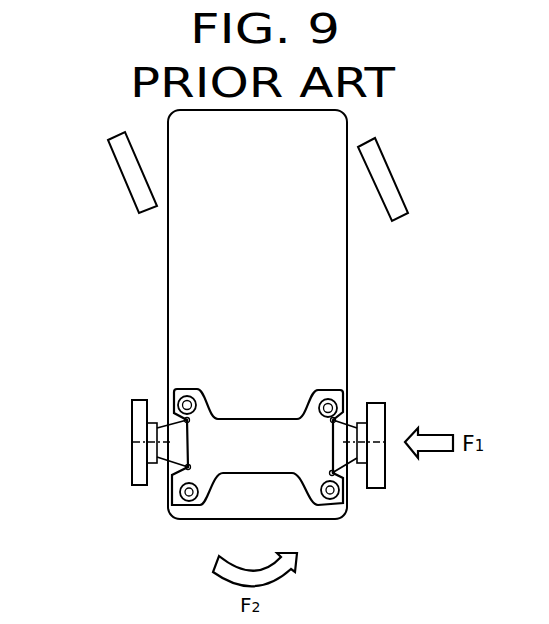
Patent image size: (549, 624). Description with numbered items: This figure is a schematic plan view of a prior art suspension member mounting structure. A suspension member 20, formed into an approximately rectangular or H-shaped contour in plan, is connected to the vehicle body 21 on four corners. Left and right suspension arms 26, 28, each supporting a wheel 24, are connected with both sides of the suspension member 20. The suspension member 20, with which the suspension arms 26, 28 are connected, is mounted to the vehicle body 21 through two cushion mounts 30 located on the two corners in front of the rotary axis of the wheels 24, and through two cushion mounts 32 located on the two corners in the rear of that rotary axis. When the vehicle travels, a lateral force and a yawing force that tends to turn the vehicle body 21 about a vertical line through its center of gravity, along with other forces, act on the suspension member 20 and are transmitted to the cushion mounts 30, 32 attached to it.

The suspension member 20 is at (275, 463).
The vehicle body 21 is at (347, 278).
The wheel 24 is at (128, 455).
The left suspension arm 26 is at (160, 418).
The right suspension arm 28 is at (355, 408).
The cushion mount 30 is at (189, 396).
The cushion mount 32 is at (180, 498).